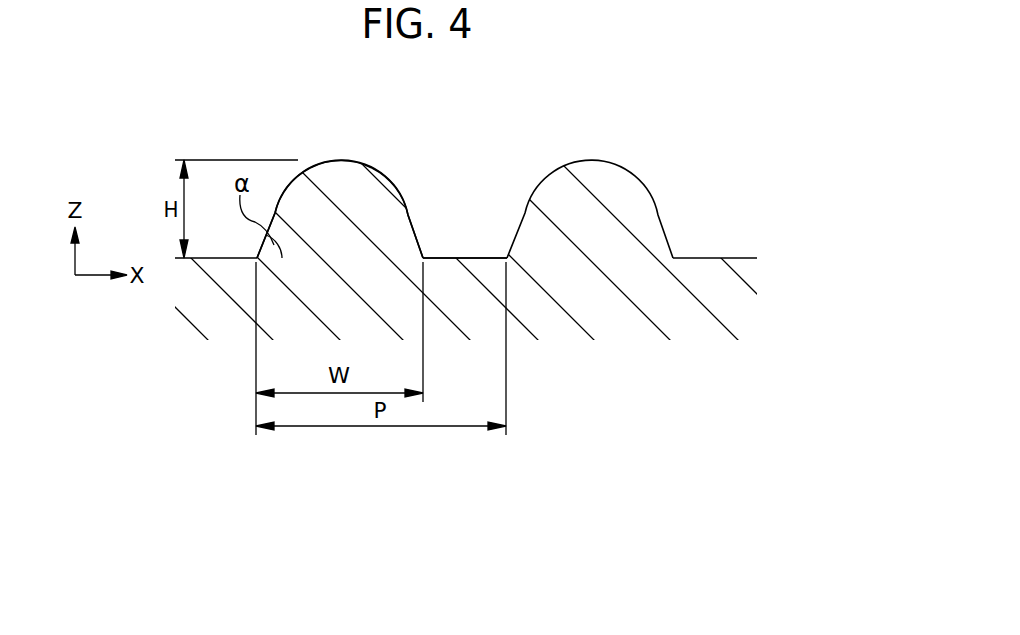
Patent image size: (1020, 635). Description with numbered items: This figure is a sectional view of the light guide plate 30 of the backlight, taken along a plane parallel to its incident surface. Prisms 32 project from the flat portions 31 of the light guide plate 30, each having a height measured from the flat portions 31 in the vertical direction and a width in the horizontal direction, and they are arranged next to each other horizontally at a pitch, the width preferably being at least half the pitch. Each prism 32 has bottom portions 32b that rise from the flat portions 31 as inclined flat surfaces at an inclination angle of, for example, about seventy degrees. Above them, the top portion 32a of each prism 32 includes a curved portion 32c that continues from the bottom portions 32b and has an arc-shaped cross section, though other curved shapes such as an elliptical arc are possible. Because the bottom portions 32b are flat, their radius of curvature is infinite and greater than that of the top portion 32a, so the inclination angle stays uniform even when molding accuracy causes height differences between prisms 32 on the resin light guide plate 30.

The light guide plate 30 is at (698, 267).
The flat portions 31 is at (497, 256).
The prisms 32 is at (380, 197).
The top portion 32a is at (339, 160).
The bottom portions 32b is at (412, 215).
The curved portion 32c is at (288, 183).